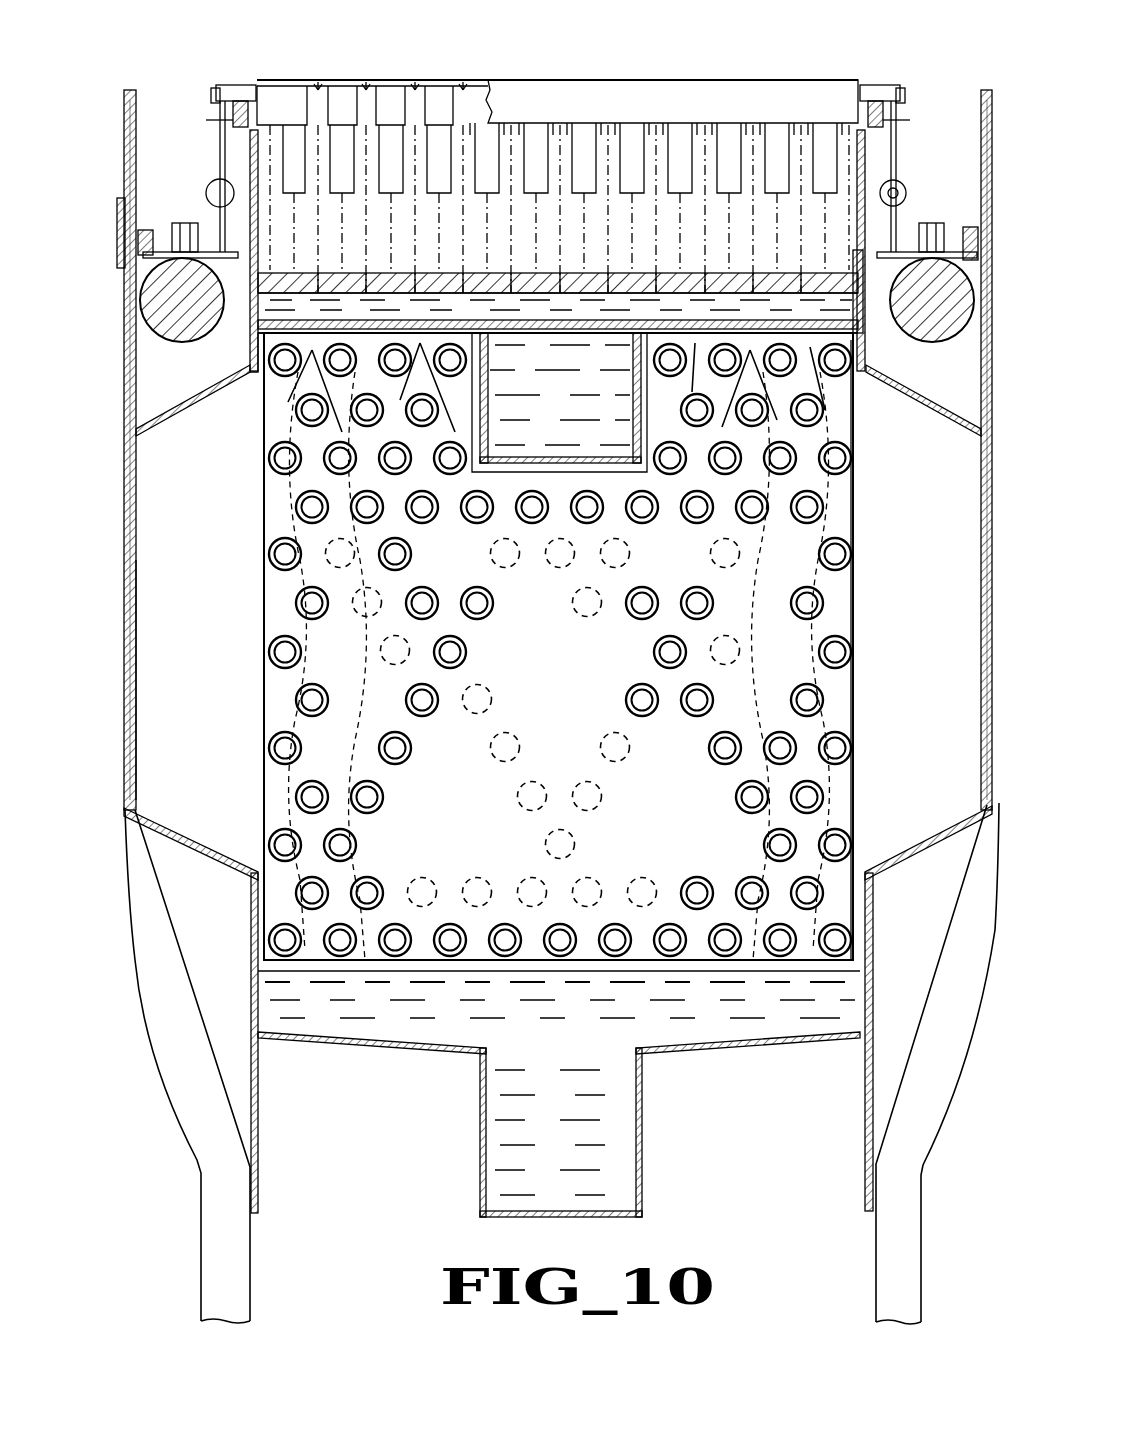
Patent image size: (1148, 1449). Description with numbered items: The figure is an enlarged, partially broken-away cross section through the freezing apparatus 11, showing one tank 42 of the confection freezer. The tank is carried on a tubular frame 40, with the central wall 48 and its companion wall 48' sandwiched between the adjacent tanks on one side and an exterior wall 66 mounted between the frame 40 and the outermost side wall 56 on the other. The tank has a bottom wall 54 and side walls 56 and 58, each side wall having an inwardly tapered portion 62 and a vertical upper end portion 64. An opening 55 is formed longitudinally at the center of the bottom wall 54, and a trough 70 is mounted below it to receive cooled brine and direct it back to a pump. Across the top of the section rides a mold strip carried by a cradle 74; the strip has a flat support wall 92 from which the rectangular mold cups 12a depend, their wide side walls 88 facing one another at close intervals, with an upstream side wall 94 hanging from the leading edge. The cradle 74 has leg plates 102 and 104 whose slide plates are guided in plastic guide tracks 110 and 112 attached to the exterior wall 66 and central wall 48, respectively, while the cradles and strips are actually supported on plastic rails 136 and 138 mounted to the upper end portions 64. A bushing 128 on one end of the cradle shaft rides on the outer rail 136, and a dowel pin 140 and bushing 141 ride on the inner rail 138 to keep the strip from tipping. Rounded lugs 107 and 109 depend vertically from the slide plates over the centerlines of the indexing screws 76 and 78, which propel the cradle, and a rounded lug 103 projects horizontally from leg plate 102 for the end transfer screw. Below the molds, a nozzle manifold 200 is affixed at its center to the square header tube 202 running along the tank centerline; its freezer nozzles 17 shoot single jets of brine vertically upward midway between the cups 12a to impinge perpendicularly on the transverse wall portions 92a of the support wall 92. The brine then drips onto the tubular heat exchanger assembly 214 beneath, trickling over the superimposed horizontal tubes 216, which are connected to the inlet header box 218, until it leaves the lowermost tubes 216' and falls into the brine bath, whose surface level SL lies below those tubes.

The freezing apparatus 11 is at (868, 392).
The mold cups 12a is at (360, 88).
The freezer nozzles 17 is at (364, 280).
The tubular frame 40 is at (876, 1240).
The tank 42 is at (213, 873).
The wall 48 is at (161, 450).
The wall 48' is at (171, 450).
The bottom wall 54 is at (368, 1052).
The opening 55 is at (622, 1050).
The side wall 56 is at (981, 585).
The side wall 58 is at (137, 598).
The inwardly tapered portions 62 is at (160, 430).
The vertical upper end portions 64 is at (250, 152).
The exterior wall 66 is at (981, 554).
The trough 70 is at (480, 1145).
The cradle 74 is at (900, 102).
The indexing screw 76 is at (905, 336).
The indexing screw 78 is at (160, 338).
The side walls of the mold cups 88 is at (330, 125).
The support wall 92 is at (480, 80).
The transverse wall portions 92a is at (460, 86).
The upstream side wall 94 is at (580, 116).
The leg plate 102 is at (896, 145).
The rounded lug 103 is at (906, 192).
The leg plate 104 is at (220, 178).
The rounded lug 107 is at (858, 255).
The rounded lug 109 is at (255, 258).
The guide track 110 is at (968, 230).
The guide track 112 is at (146, 232).
The bushing 128 is at (880, 85).
The support rail 136 is at (883, 119).
The support rail 138 is at (233, 120).
The dowel pin 140 is at (211, 96).
The bushing 141 is at (225, 84).
The nozzle manifold 200 is at (250, 335).
The header tube 202 is at (518, 473).
The tubular heat exchanger assembly 214 is at (864, 532).
The heat exchanger tubes 216 is at (553, 626).
The lowermost tubes 216' is at (554, 901).
The inlet header box 218 is at (583, 668).
The surface level SL is at (860, 978).